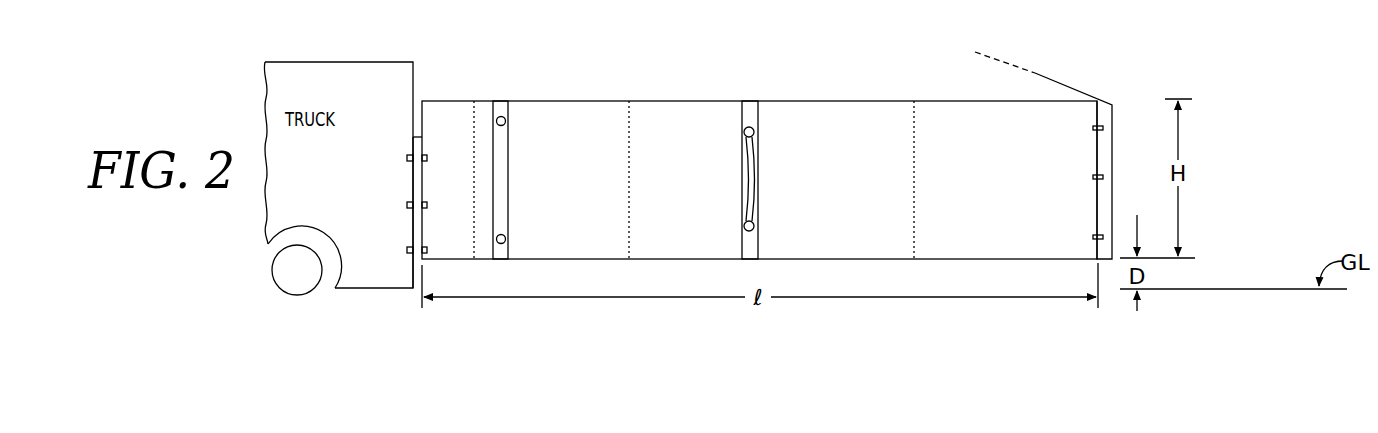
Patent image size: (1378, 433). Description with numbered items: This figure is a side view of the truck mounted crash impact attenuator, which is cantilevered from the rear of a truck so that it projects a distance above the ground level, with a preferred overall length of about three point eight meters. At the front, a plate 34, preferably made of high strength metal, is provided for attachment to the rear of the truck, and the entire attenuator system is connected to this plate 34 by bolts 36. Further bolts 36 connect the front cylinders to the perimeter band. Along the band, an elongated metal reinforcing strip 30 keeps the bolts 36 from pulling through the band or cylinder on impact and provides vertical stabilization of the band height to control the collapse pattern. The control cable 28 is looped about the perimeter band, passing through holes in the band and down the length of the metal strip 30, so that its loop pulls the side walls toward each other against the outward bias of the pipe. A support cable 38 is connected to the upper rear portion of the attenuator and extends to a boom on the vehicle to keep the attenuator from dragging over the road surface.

The control cable 28 is at (748, 167).
The metal reinforcing strip 30 is at (500, 182).
The plate 34 is at (415, 148).
The bolts 36 is at (427, 158).
The support cable 38 is at (1062, 84).